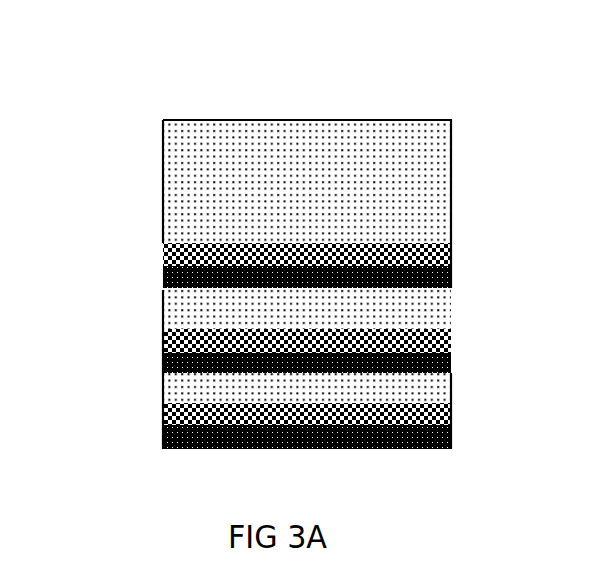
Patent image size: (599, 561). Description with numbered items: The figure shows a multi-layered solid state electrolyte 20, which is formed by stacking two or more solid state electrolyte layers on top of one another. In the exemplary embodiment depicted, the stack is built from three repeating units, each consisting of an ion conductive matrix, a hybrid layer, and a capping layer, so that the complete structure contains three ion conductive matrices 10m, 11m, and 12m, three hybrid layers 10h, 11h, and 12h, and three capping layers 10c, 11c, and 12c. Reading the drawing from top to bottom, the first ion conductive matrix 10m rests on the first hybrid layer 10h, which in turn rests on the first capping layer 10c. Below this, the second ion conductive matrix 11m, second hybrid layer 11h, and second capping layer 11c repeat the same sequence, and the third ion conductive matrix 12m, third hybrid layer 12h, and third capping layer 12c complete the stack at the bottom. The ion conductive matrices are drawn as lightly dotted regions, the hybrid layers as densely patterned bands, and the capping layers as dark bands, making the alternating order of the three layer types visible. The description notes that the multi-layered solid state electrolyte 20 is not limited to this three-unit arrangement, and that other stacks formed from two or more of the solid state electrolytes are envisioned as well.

The multi-layered solid state electrolyte 20 is at (97, 99).
The ion conductive matrix 10m is at (212, 232).
The hybrid layer 10h is at (212, 258).
The capping layer 10c is at (212, 282).
The ion conductive matrix 11m is at (399, 313).
The hybrid layer 11h is at (399, 333).
The capping layer 11c is at (399, 358).
The ion conductive matrix 12m is at (216, 383).
The hybrid layer 12h is at (216, 408).
The capping layer 12c is at (216, 429).